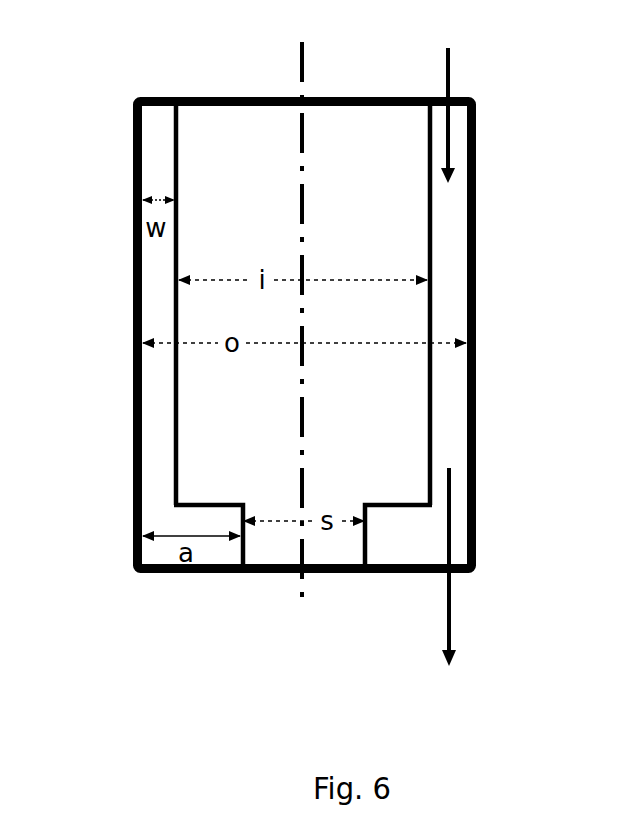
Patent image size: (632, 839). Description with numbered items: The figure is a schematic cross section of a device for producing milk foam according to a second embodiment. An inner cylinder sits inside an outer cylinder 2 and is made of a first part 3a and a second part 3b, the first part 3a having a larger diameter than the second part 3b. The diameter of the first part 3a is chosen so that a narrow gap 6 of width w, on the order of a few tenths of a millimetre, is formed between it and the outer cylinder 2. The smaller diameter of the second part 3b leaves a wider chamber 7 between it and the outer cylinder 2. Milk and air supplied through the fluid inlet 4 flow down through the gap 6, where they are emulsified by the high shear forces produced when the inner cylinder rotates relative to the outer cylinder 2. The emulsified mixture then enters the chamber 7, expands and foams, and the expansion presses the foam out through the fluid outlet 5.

The outer cylinder 2 is at (476, 368).
The first part of the inner cylinder 3a is at (333, 249).
The second part of the inner cylinder 3b is at (365, 545).
The fluid inlet 4 is at (447, 94).
The fluid outlet 5 is at (448, 588).
The gap 6 is at (165, 394).
The chamber 7 is at (200, 521).